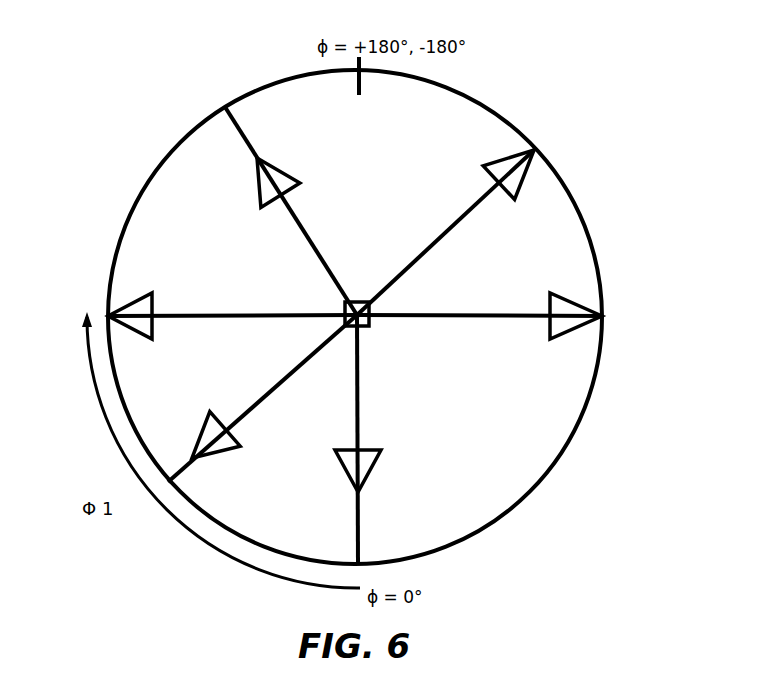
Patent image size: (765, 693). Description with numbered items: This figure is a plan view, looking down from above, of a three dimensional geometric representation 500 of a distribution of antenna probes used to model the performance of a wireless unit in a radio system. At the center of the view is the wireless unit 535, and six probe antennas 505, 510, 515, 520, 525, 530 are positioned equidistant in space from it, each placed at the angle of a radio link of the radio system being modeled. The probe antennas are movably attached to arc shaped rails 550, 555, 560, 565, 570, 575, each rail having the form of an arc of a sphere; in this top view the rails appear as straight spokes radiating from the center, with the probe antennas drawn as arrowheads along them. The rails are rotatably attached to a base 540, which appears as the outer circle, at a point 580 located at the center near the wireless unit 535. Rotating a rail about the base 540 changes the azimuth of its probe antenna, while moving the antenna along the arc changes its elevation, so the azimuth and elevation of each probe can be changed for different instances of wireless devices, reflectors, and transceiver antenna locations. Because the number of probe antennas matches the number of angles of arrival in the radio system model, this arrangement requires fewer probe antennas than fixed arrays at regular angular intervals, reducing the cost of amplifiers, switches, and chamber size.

The three dimensional geometric representation 500 is at (113, 96).
The probe antenna 505 is at (158, 292).
The probe antenna 510 is at (230, 437).
The probe antenna 515 is at (283, 168).
The probe antenna 520 is at (342, 462).
The probe antenna 525 is at (480, 158).
The probe antenna 530 is at (553, 337).
The wireless unit 535 is at (369, 326).
The base 540 is at (492, 107).
The arc shaped rail 550 is at (234, 312).
The arc shaped rail 555 is at (275, 383).
The arc shaped rail 560 is at (286, 222).
The arc shaped rail 565 is at (360, 408).
The arc shaped rail 570 is at (412, 257).
The arc shaped rail 575 is at (477, 310).
The point 580 is at (372, 302).